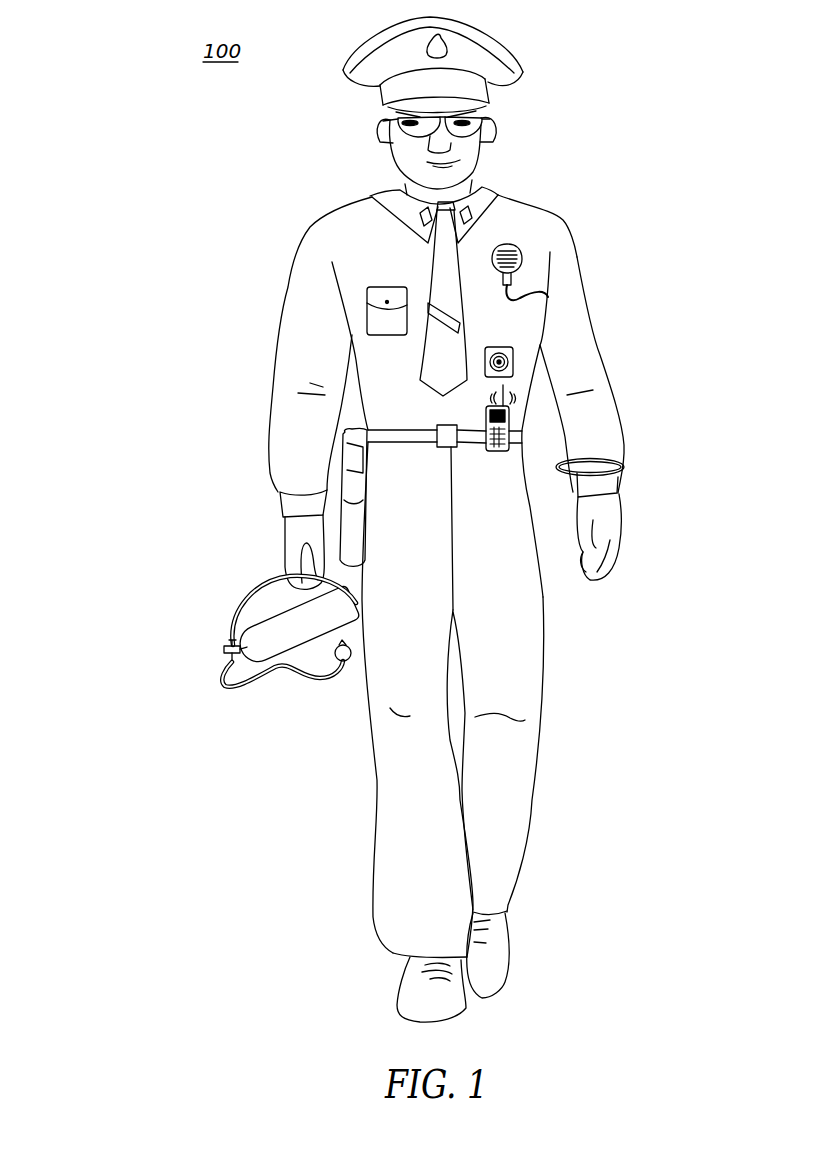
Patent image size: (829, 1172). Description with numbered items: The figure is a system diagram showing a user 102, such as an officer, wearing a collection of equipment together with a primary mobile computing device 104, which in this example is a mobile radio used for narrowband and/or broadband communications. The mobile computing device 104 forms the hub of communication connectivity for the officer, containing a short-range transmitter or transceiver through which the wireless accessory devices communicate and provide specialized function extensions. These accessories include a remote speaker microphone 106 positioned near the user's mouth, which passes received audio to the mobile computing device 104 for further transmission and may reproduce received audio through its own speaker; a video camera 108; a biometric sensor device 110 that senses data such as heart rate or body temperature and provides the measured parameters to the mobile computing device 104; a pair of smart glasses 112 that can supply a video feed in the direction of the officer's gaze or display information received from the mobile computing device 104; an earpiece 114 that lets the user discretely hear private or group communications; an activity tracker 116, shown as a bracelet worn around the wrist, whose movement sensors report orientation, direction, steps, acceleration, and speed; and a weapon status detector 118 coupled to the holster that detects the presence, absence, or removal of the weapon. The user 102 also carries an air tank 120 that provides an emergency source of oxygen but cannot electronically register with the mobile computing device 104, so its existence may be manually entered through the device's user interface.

The user 102 is at (542, 197).
The primary mobile computing device 104 is at (512, 406).
The remote speaker microphone 106 is at (520, 252).
The video camera 108 is at (517, 350).
The biometric sensor device 110 is at (420, 437).
The smart glasses 112 is at (486, 103).
The earpiece 114 is at (492, 128).
The activity tracker 116 is at (626, 461).
The weapon status detector 118 is at (356, 531).
The air tank 120 is at (273, 632).